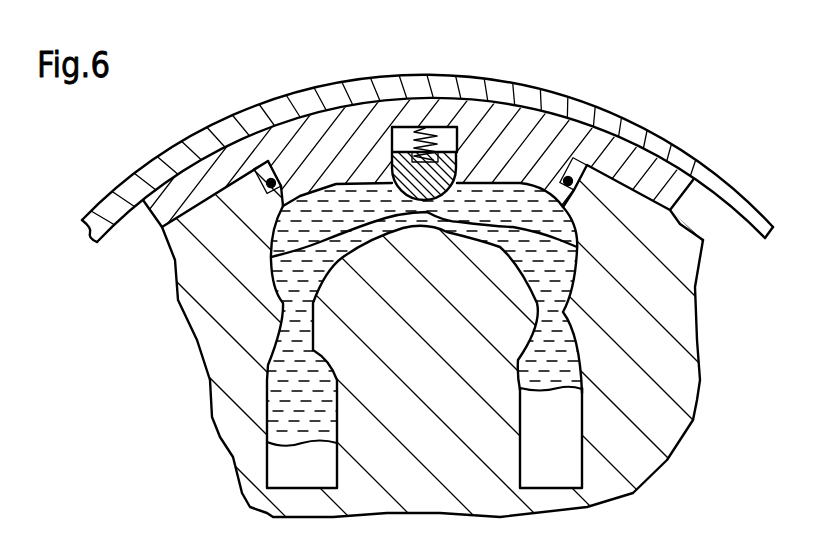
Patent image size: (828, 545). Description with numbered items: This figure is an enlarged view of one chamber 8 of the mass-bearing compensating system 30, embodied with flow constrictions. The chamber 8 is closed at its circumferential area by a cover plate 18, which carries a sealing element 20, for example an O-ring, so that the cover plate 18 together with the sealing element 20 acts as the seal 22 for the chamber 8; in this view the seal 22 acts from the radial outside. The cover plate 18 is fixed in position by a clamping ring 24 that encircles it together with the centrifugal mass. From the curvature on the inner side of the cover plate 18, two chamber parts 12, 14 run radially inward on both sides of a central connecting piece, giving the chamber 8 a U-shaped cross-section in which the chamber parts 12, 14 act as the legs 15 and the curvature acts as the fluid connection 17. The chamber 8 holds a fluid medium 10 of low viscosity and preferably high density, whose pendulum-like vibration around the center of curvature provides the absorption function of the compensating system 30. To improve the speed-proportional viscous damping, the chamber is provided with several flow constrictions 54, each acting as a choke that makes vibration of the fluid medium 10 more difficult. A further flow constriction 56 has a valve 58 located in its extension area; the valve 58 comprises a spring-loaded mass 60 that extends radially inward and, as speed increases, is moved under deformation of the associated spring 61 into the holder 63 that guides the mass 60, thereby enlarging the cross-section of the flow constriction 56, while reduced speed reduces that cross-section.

The chamber 8 is at (275, 427).
The fluid medium 10 is at (653, 172).
The chamber part 12 is at (285, 352).
The chamber part 14 is at (565, 355).
The legs 15 is at (295, 475).
The fluid connection 17 is at (585, 246).
The cover plate 18 is at (557, 130).
The sealing element 20 is at (266, 180).
The seal 22 is at (277, 157).
The clamping ring 24 is at (361, 85).
The mass-bearing compensating system 30 is at (583, 390).
The flow constriction 54 is at (293, 307).
The flow constriction 56 is at (330, 238).
The valve 58 is at (419, 114).
The spring-loaded mass 60 is at (388, 150).
The spring 61 is at (432, 127).
The holder 63 is at (397, 127).